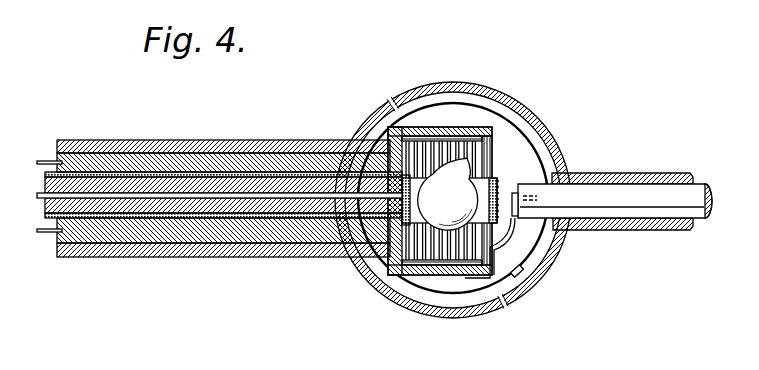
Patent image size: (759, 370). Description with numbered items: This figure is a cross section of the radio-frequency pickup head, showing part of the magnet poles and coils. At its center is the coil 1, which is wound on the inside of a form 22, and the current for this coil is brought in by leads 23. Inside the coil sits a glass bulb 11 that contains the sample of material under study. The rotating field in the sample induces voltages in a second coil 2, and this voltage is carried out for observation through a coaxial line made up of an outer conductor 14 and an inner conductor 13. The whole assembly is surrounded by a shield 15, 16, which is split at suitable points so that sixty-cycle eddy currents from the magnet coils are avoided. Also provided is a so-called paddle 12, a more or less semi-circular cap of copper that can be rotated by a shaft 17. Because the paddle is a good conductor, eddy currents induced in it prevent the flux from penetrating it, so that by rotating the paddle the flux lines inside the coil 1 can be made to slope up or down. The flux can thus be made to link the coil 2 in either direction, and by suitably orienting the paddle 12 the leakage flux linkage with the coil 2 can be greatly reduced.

The coil 1 is at (487, 143).
The coil 2 is at (498, 183).
The glass bulb 11 is at (452, 196).
The paddle 12 is at (508, 229).
The inner conductor 13 is at (37, 196).
The outer conductor 14 is at (45, 177).
The shield 15 is at (70, 140).
The shield 16 is at (58, 254).
The shaft 17 is at (712, 221).
The form 22 is at (448, 276).
The leads 23 is at (37, 163).